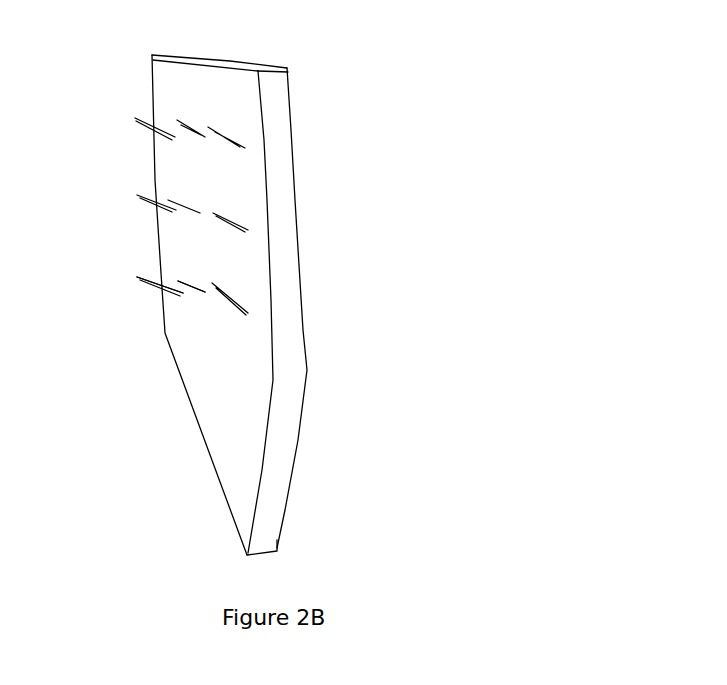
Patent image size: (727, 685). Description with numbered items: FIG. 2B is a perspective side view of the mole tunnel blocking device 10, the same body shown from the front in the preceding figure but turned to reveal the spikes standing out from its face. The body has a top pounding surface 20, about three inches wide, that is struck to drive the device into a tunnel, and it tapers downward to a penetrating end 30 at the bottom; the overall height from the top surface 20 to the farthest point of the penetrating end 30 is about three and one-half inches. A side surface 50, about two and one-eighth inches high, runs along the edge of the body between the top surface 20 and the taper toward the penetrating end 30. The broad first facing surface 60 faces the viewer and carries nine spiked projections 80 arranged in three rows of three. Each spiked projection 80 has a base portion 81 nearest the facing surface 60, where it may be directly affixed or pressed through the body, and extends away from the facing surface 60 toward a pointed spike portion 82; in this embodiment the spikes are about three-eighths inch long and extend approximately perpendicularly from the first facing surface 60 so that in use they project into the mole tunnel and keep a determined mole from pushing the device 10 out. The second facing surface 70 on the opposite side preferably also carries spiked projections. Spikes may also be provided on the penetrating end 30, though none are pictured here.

The device 10 is at (518, 41).
The top pounding surface 20 is at (237, 62).
The penetrating end 30 is at (250, 556).
The side surface 50 is at (283, 158).
The first facing surface 60 is at (190, 241).
The second facing surface 70 is at (318, 244).
The spiked projections 80 is at (212, 297).
The base portion 81 is at (185, 293).
The spike portion 82 is at (138, 277).